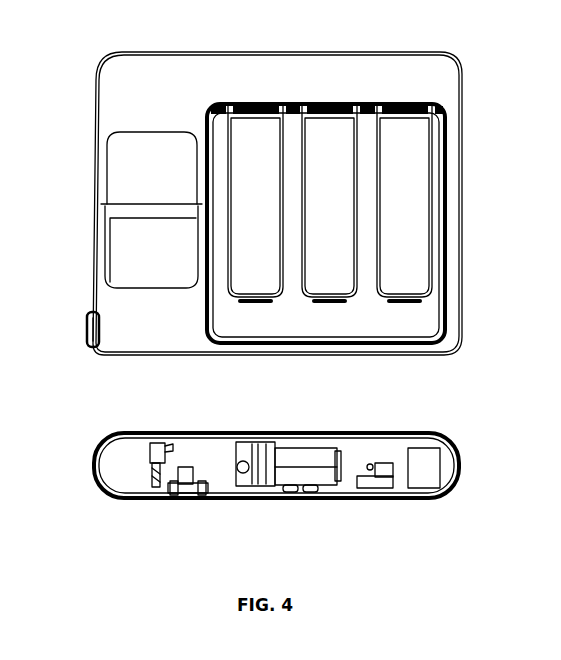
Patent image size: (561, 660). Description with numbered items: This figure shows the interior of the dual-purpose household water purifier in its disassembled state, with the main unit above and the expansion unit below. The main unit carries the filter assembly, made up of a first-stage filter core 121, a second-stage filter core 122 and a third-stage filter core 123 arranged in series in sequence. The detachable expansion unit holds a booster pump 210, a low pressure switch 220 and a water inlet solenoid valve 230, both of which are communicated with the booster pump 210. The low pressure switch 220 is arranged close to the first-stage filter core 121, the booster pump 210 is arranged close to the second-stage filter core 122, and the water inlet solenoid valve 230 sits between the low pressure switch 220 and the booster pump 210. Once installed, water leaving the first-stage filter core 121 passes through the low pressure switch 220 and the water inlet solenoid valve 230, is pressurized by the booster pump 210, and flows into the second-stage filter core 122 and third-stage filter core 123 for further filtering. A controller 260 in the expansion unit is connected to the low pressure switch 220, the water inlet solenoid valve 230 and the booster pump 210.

The first-stage filter core 121 is at (243, 270).
The second-stage filter core 122 is at (338, 272).
The third-stage filter core 123 is at (417, 272).
The booster pump 210 is at (258, 483).
The low pressure switch 220 is at (150, 463).
The water inlet solenoid valve 230 is at (190, 493).
The controller 260 is at (416, 470).